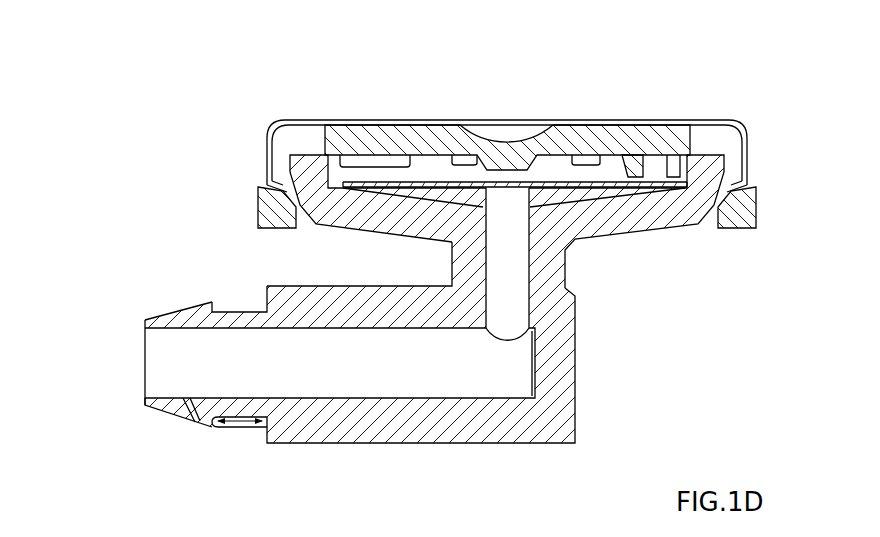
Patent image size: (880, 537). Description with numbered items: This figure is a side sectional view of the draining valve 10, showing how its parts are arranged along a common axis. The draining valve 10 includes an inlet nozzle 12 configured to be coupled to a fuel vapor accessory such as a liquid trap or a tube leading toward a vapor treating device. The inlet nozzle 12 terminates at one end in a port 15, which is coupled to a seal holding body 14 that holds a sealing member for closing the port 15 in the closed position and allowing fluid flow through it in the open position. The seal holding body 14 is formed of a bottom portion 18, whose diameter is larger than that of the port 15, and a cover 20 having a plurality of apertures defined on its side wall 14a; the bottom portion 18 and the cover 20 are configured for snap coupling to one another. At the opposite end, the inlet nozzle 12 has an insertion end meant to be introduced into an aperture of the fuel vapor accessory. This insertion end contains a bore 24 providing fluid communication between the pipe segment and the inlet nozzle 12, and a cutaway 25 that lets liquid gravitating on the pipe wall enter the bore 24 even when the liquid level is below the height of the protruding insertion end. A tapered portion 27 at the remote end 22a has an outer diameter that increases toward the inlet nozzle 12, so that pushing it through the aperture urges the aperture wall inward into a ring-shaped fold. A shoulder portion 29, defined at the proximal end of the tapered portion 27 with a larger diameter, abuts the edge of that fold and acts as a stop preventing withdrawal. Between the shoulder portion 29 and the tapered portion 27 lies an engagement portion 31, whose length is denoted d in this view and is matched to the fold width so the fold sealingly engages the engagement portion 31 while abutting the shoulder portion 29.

The draining valve 10 is at (202, 208).
The inlet nozzle 12 is at (322, 305).
The seal holding body 14 is at (427, 172).
The side wall 14a is at (264, 165).
The port 15 is at (500, 252).
The bottom portion 18 is at (632, 213).
The cover 20 is at (392, 137).
The remote end 22a is at (143, 325).
The bore 24 is at (180, 355).
The cutaway 25 is at (168, 405).
The tapered portion 27 is at (203, 422).
The shoulder portion 29 is at (212, 428).
The engagement portion 31 is at (238, 310).